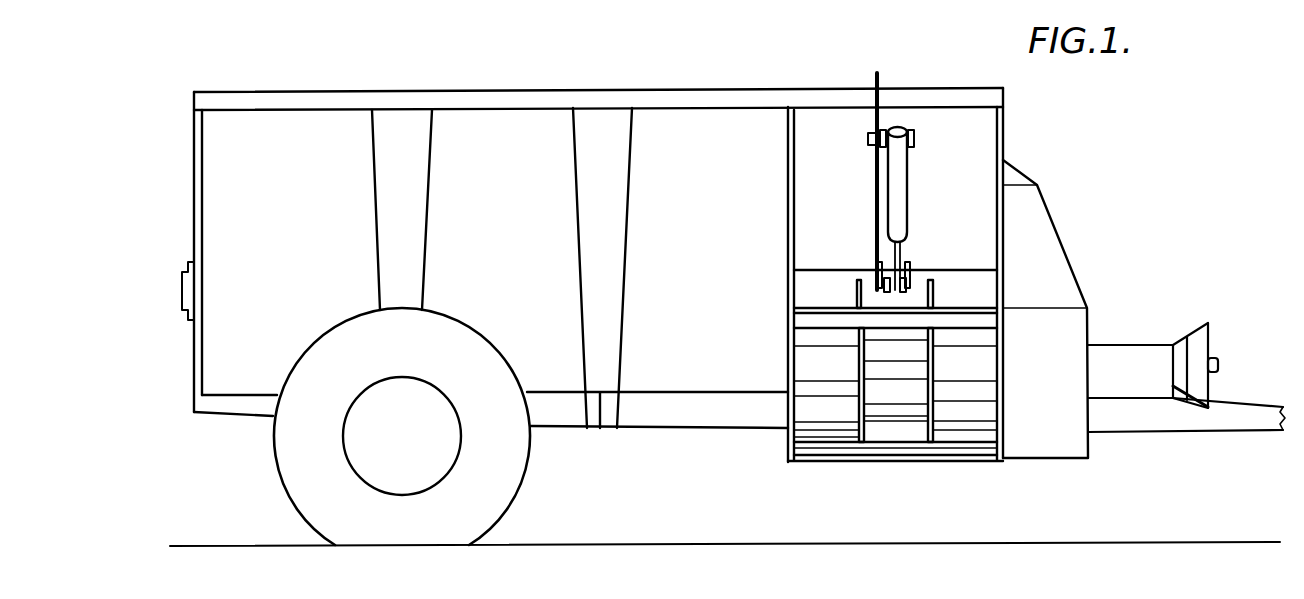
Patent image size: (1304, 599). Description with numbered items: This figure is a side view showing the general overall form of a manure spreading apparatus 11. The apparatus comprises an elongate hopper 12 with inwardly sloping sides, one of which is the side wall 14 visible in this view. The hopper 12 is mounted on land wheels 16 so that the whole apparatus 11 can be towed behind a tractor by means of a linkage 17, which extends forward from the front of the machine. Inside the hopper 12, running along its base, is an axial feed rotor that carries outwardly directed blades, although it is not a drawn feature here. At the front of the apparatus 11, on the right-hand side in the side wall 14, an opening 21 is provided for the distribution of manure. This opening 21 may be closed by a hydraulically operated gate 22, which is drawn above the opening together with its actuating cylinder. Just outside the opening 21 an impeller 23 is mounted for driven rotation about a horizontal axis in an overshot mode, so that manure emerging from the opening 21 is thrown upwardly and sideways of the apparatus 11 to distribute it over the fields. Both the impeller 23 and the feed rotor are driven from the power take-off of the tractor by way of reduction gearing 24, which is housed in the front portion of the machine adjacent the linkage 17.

The manure spreading apparatus 11 is at (1011, 120).
The elongate hopper 12 is at (701, 88).
The side wall 14 is at (259, 240).
The land wheels 16 is at (307, 503).
The linkage 17 is at (1206, 420).
The opening 21 is at (786, 349).
The hydraulically operated gate 22 is at (808, 288).
The impeller 23 is at (823, 407).
The reduction gearing 24 is at (1043, 343).